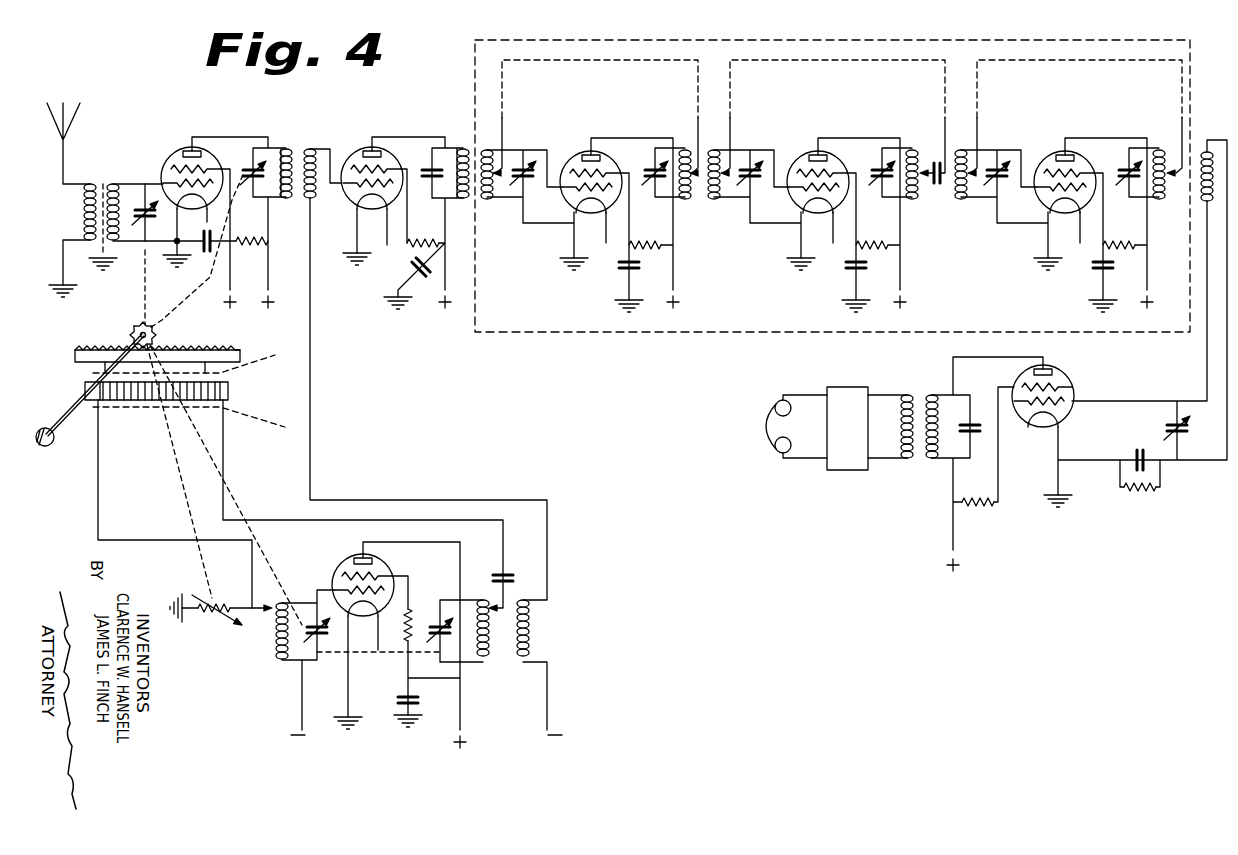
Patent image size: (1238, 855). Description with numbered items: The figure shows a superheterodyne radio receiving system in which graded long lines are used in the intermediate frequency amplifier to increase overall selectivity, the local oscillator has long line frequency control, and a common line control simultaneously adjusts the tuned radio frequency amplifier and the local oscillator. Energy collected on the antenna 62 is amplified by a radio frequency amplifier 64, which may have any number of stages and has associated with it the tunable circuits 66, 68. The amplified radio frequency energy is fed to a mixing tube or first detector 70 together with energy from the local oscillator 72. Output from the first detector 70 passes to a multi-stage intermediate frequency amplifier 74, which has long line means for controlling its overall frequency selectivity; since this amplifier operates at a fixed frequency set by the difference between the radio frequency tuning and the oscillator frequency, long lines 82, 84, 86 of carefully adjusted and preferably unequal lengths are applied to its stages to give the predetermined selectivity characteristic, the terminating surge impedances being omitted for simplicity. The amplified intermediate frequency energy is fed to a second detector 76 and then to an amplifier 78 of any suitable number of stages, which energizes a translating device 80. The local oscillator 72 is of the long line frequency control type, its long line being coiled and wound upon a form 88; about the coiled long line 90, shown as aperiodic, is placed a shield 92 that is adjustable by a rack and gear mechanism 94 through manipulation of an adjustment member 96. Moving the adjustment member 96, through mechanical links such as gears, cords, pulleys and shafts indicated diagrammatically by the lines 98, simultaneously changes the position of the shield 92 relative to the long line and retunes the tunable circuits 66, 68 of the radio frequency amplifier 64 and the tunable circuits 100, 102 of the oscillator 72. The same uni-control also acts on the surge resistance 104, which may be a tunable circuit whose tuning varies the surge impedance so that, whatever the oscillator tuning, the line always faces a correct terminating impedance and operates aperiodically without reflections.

The antenna 62 is at (66, 141).
The radio frequency amplifier 64 is at (180, 148).
The tunable circuit 66 is at (134, 240).
The tunable circuit 68 is at (273, 147).
The mixing tube or first detector 70 is at (359, 147).
The local oscillator 72 is at (344, 563).
The intermediate frequency amplifier 74 is at (684, 333).
The second detector 76 is at (1066, 373).
The amplifier 78 is at (853, 385).
The translating device 80 is at (772, 403).
The long line 82 is at (577, 60).
The long line 84 is at (824, 60).
The long line 86 is at (1074, 60).
The form 88 is at (230, 395).
The coiled long line 90 is at (226, 383).
The shield 92 is at (277, 355).
The rack and gear mechanism 94 is at (157, 349).
The adjustment member 96 is at (50, 446).
The lines 98 is at (144, 294).
The tunable circuit 100 is at (295, 657).
The tunable circuit 102 is at (470, 657).
The surge resistance 104 is at (214, 620).